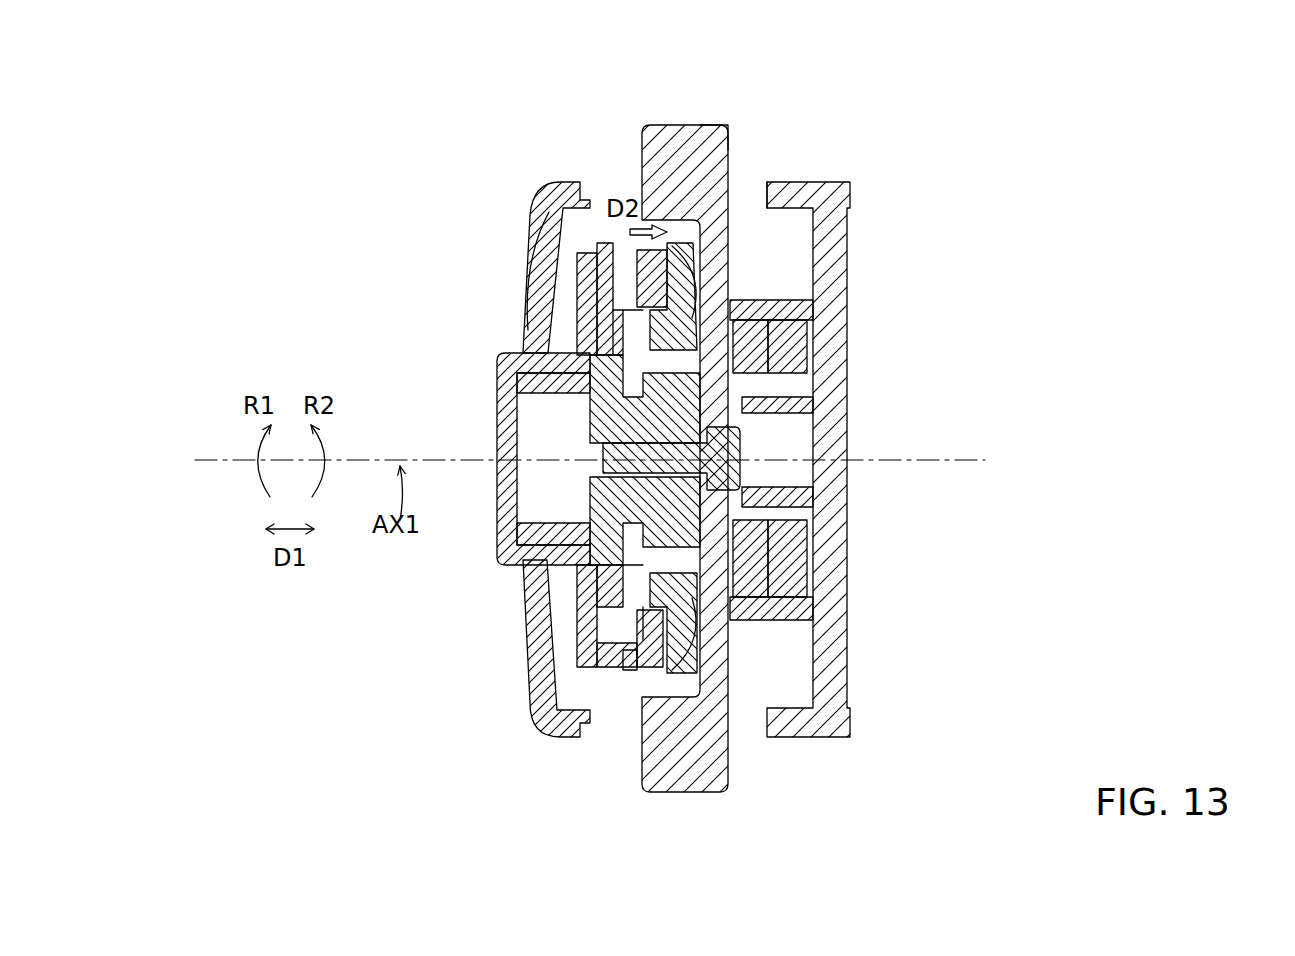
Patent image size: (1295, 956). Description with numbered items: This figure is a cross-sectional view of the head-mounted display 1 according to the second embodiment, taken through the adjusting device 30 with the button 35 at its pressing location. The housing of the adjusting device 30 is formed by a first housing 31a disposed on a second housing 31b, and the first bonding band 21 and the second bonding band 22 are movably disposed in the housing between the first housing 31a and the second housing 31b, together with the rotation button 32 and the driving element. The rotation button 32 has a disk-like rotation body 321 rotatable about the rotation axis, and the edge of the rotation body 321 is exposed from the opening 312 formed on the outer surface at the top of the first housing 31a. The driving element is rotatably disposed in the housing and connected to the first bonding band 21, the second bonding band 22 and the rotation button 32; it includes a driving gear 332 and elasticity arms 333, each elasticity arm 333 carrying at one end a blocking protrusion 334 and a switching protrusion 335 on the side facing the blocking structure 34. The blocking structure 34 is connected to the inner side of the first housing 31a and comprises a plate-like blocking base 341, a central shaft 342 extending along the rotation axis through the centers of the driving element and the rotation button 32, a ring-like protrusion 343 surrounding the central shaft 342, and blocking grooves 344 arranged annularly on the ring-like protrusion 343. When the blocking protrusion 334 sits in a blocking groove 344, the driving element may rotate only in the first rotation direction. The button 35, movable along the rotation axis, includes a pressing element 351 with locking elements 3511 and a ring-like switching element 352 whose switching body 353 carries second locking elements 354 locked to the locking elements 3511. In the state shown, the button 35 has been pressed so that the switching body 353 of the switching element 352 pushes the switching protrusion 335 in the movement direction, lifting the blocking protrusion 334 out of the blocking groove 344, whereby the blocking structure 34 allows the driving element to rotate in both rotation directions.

The head-mounted display 1 is at (1040, 102).
The adjusting device 30 is at (248, 70).
The first housing 31a is at (550, 183).
The second housing 31b is at (835, 190).
The opening 312 is at (814, 165).
The rotation button 32 is at (688, 122).
The rotation body 321 is at (718, 137).
The blocking structure 34 is at (602, 238).
The button 35 is at (478, 390).
The pressing element 351 is at (525, 368).
The locking element 3511 is at (575, 680).
The switching element 352 is at (643, 676).
The switching body 353 is at (652, 268).
The second locking element 354 is at (612, 655).
The blocking base 341 is at (592, 300).
The central shaft 342 is at (700, 478).
The ring-like protrusion 343 is at (525, 537).
The blocking groove 344 is at (633, 333).
The driving gear 332 is at (805, 405).
The elasticity arm 333 is at (728, 302).
The blocking protrusion 334 is at (678, 302).
The switching protrusion 335 is at (693, 248).
The first bonding band 21 is at (780, 355).
The second bonding band 22 is at (805, 337).